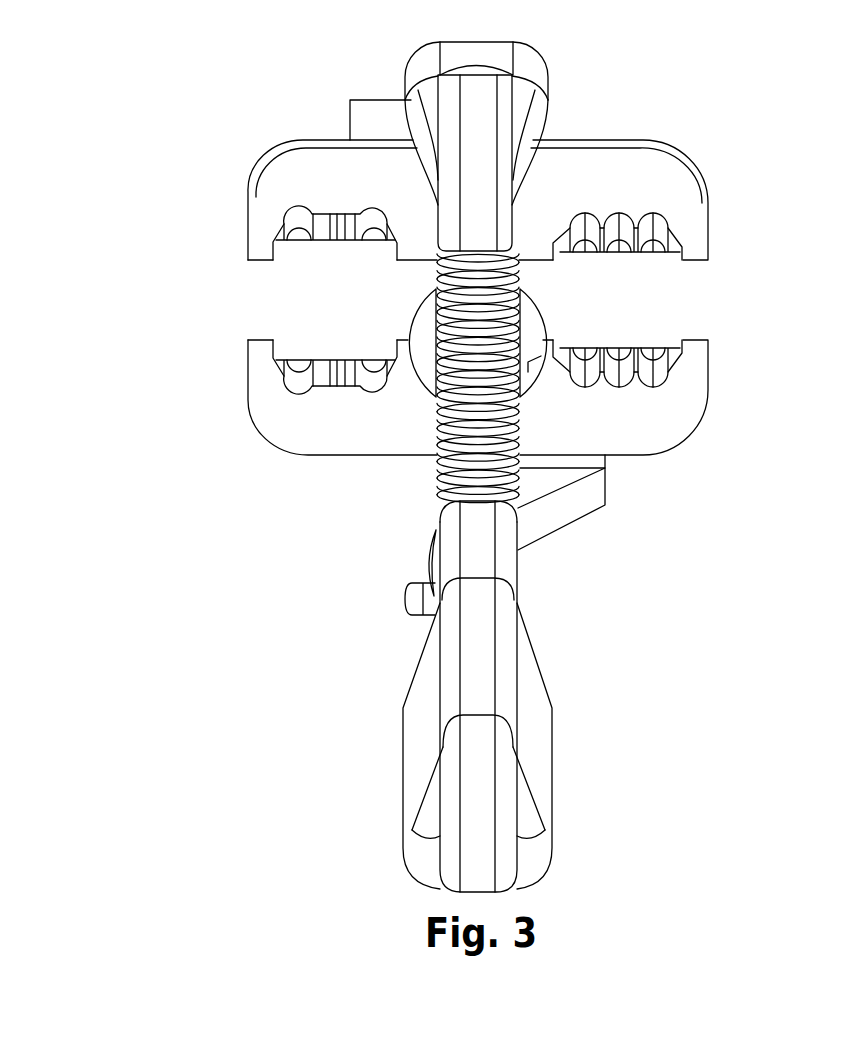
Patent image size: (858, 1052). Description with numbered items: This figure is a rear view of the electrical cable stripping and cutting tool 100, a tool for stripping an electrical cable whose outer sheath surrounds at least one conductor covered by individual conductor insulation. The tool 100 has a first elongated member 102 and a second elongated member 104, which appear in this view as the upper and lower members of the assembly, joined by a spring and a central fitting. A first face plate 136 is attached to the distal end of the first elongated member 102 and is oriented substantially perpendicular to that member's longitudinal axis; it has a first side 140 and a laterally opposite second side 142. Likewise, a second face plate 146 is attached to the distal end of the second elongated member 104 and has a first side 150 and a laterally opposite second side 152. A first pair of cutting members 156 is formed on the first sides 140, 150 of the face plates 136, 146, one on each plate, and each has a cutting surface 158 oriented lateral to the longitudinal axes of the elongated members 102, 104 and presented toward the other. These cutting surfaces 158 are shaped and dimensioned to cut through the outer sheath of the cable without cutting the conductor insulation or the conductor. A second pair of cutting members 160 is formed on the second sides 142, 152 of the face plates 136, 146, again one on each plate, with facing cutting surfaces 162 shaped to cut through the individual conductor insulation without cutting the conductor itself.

The electrical cable stripping and cutting tool 100 is at (205, 752).
The first elongated member 102 is at (480, 74).
The second elongated member 104 is at (430, 813).
The first face plate 136 is at (680, 423).
The first side of the first face plate 140 is at (330, 460).
The second side of the first face plate 142 is at (650, 440).
The second face plate 146 is at (290, 167).
The first side of the second face plate 150 is at (328, 168).
The second side of the second face plate 152 is at (629, 162).
The first pair of cutting members 156 is at (259, 344).
The cutting surface of the first pair of cutting members 158 is at (308, 223).
The second pair of cutting members 160 is at (703, 291).
The cutting surface of the second pair of cutting members 162 is at (670, 231).